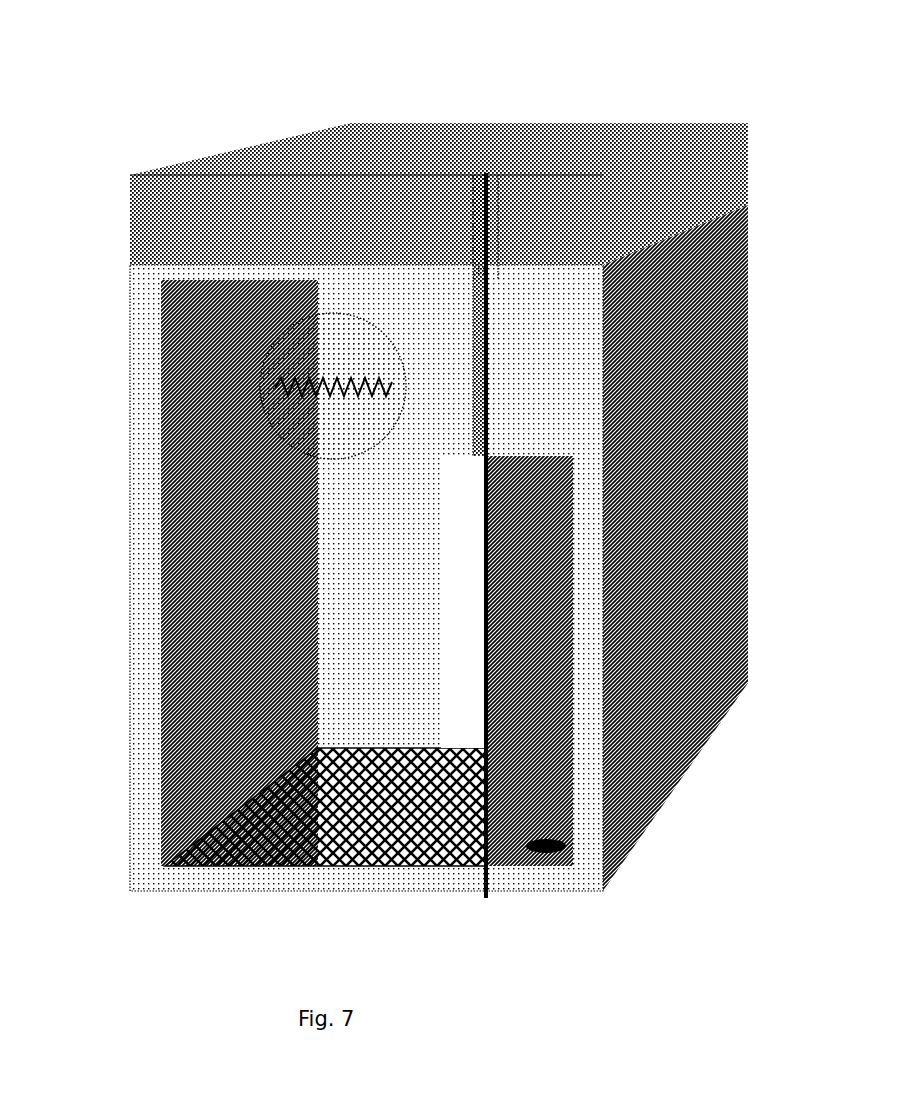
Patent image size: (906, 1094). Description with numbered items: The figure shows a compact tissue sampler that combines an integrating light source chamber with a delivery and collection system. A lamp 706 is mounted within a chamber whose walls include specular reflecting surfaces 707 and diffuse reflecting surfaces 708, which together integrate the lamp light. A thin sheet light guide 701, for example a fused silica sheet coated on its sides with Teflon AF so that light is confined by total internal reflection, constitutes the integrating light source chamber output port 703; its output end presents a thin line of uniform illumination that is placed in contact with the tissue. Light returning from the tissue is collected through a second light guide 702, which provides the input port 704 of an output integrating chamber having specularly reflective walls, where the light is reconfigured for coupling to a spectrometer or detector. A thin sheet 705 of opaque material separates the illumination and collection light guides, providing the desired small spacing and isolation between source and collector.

The thin sheet light guide 701 is at (464, 183).
The light guide 702 is at (483, 168).
The integrating light source chamber output port 703 is at (449, 460).
The input port 704 is at (505, 457).
The thin sheet of opaque material 705 is at (483, 150).
The lamp 706 is at (240, 378).
The specular reflecting surfaces 707 is at (494, 718).
The diffuse reflecting surfaces 708 is at (260, 824).